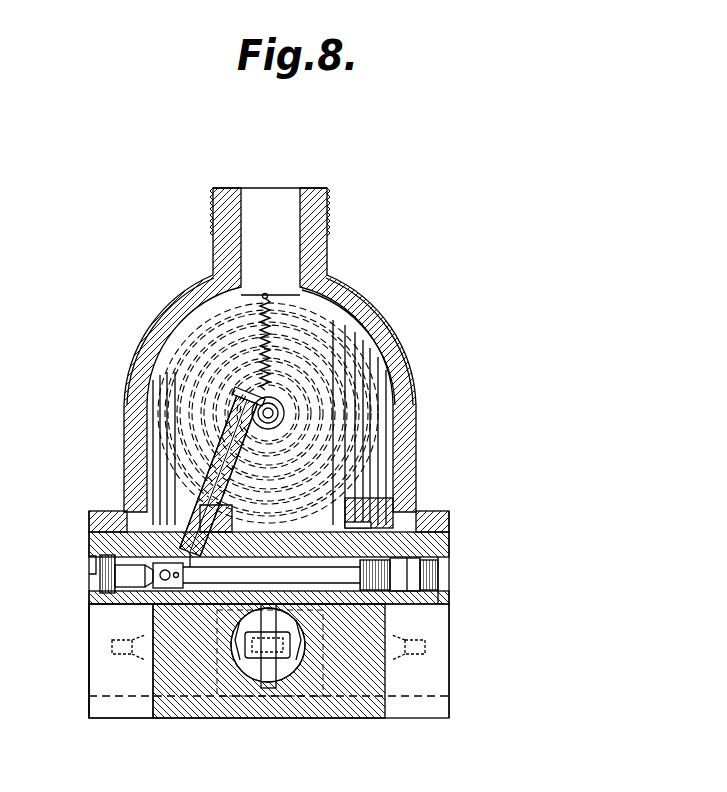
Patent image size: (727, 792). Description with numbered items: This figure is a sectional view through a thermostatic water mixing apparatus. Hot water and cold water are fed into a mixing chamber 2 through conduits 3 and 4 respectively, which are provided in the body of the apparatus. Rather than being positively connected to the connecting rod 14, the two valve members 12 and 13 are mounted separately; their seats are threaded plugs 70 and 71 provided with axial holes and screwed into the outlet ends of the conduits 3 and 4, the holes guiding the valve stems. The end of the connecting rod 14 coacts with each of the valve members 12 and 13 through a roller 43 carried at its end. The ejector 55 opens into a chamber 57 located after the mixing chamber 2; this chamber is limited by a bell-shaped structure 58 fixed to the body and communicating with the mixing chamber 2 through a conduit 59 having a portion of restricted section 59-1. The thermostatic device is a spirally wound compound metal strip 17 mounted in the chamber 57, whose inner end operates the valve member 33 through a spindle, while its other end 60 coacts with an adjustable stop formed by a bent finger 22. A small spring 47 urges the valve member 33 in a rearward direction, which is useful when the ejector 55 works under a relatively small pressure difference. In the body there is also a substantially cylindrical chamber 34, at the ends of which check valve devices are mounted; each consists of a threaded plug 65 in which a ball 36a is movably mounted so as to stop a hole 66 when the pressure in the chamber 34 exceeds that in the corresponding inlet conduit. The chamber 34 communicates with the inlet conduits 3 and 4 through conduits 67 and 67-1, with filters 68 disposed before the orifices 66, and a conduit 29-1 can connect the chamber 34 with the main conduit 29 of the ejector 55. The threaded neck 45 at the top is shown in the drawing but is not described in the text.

The mixing chamber 2 is at (268, 690).
The conduit 3 is at (100, 682).
The conduit 4 is at (447, 668).
The valve member 12 is at (240, 656).
The valve member 13 is at (308, 655).
The connecting rod 14 is at (262, 688).
The compound metal strip 17 is at (406, 392).
The bent finger 22 is at (186, 336).
The main conduit 29 is at (214, 462).
The conduit 29-1 is at (158, 522).
The valve member 33 is at (258, 400).
The chamber 34 is at (200, 578).
The ball 36a is at (100, 520).
The roller 43 is at (283, 682).
The threaded neck 45 is at (212, 213).
The small spring 47 is at (272, 320).
The ejector 55 is at (224, 436).
The chamber 57 is at (372, 456).
The bell-shaped structure 58 is at (398, 346).
The conduit 59 is at (300, 535).
The portion of restricted section 59-1 is at (366, 502).
The other end of compound strip 60 is at (158, 325).
The threaded plug 65 is at (400, 569).
The hole 66 is at (140, 576).
The conduit 67 is at (125, 597).
The conduit 67-1 is at (432, 600).
The filter 68 is at (160, 572).
The threaded plug 70 is at (148, 650).
The threaded plug 71 is at (395, 660).